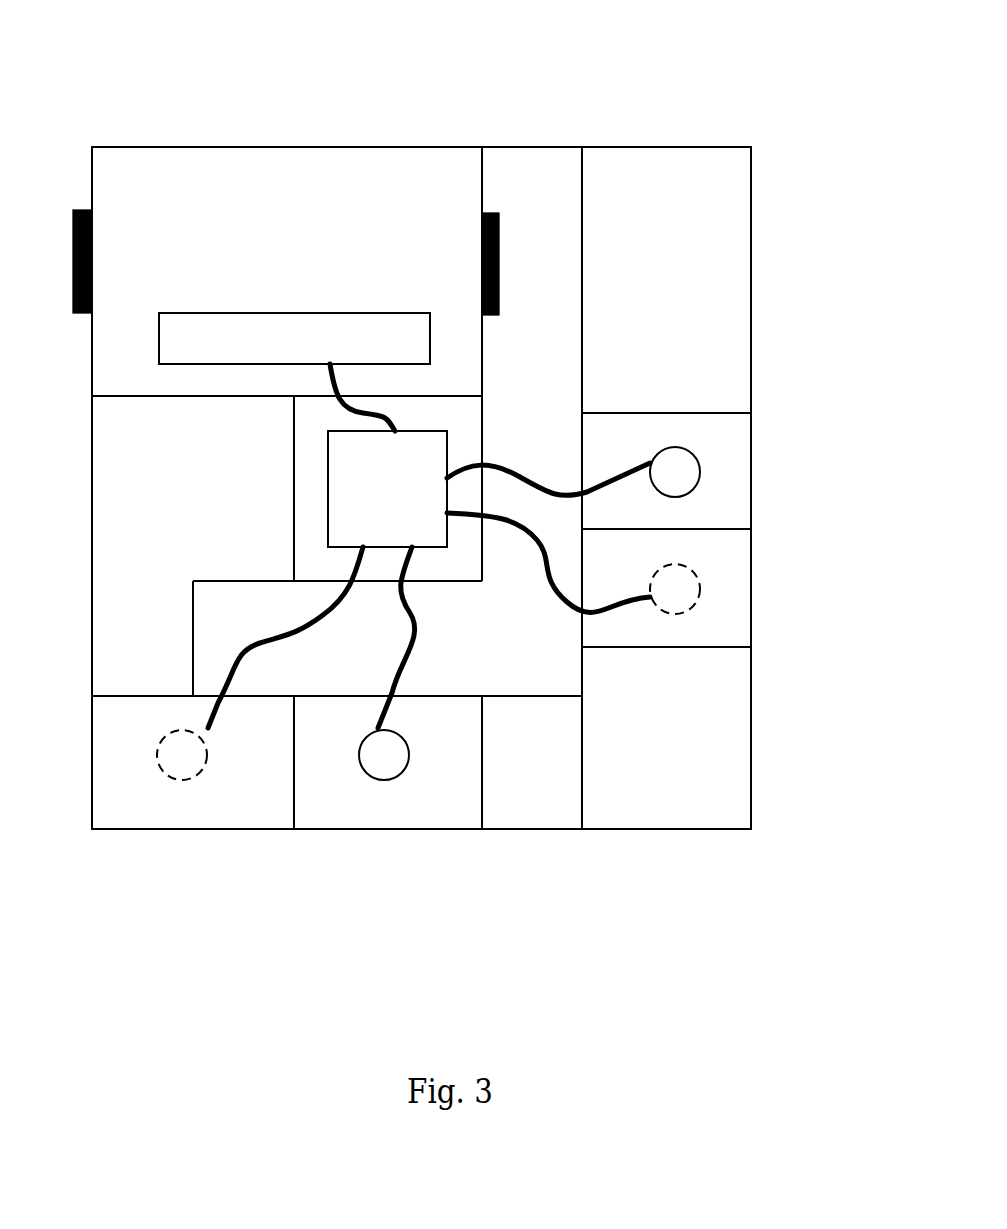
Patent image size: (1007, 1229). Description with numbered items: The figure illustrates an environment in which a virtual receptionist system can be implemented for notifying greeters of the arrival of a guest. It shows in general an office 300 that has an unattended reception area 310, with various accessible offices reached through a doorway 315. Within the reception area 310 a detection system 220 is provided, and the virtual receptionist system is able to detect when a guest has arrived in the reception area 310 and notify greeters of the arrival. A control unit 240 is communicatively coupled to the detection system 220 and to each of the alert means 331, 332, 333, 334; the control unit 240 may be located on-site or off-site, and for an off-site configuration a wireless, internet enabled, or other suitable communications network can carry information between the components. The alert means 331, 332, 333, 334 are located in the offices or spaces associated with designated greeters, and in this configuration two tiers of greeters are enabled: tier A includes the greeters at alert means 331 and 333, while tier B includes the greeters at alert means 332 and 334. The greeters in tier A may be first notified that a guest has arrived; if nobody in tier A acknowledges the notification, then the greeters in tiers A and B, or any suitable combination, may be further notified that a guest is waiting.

The office 300 is at (782, 37).
The reception area 310 is at (393, 170).
The doorway 315 is at (505, 250).
The detection system 220 is at (255, 305).
The control unit 240 is at (325, 478).
The alert means 331 is at (712, 468).
The alert means 332 is at (717, 587).
The alert means 333 is at (383, 783).
The alert means 334 is at (180, 783).